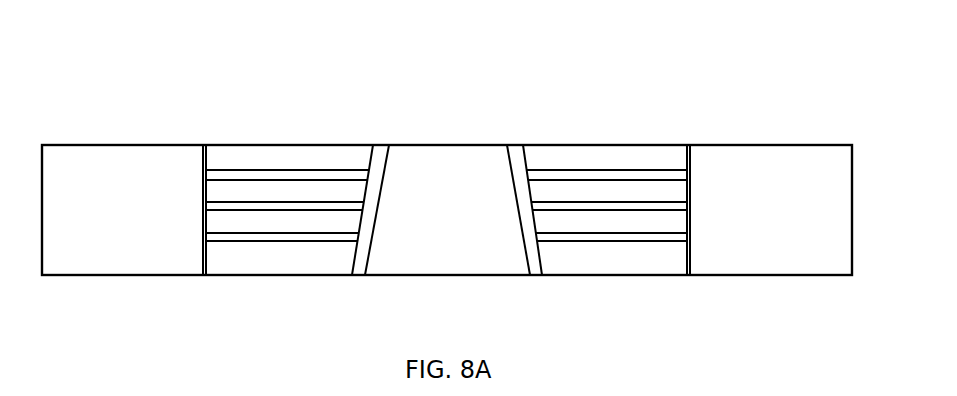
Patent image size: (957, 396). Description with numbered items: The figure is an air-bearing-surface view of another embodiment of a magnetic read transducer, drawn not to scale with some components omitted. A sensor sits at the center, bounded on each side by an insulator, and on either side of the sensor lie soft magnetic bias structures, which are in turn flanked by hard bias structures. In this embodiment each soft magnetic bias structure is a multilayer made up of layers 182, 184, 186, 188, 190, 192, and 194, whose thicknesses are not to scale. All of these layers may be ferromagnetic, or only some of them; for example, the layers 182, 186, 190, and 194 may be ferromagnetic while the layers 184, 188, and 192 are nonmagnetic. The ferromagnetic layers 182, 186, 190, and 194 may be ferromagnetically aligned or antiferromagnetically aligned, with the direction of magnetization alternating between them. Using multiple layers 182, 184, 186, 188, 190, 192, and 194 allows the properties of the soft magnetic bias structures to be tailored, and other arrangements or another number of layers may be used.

The layer 194 is at (220, 145).
The layer 192 is at (253, 167).
The layer 190 is at (285, 175).
The layer 188 is at (300, 202).
The layer 186 is at (350, 208).
The layer 184 is at (223, 243).
The layer 182 is at (261, 275).